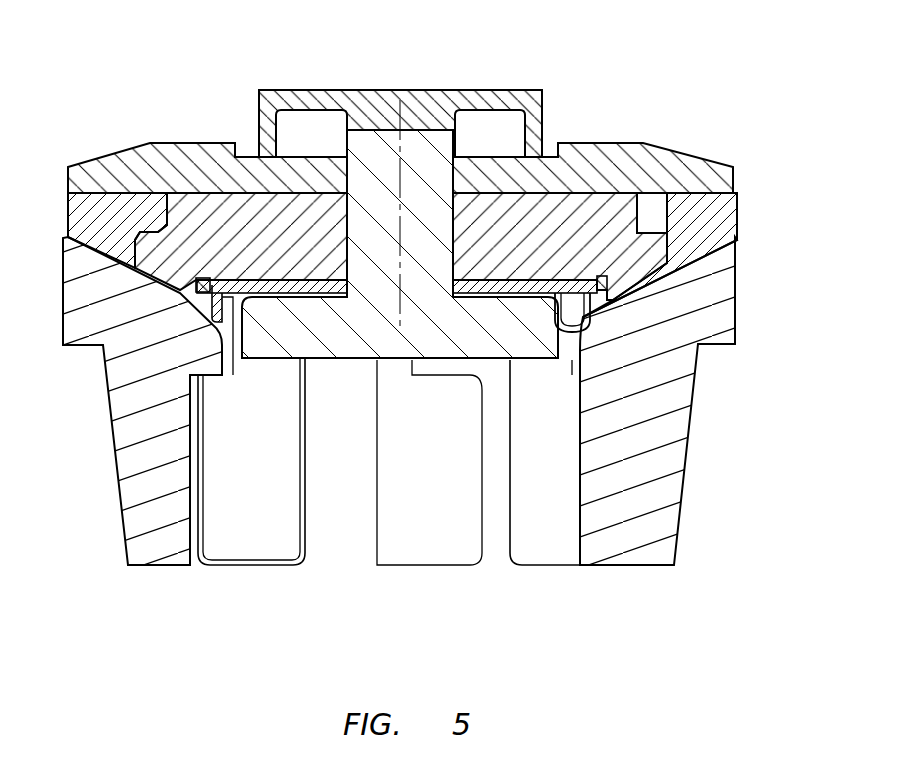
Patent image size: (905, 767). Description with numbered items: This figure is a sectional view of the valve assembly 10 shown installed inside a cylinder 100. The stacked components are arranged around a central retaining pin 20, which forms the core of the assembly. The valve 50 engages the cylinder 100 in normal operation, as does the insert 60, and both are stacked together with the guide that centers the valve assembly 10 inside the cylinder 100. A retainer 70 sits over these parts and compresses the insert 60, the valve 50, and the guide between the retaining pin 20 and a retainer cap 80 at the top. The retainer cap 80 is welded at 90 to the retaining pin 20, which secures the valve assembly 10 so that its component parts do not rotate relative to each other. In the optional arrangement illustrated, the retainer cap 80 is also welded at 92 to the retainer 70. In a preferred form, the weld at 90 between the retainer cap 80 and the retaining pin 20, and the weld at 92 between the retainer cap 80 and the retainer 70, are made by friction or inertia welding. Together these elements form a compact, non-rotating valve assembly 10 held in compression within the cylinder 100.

The valve assembly 10 is at (138, 103).
The retaining pin 20 is at (518, 362).
The valve 50 is at (620, 283).
The insert 60 is at (737, 218).
The retainer 70 is at (700, 158).
The retainer cap 80 is at (548, 90).
The weld 90 is at (457, 127).
The weld 92 is at (257, 143).
The cylinder 100 is at (685, 482).